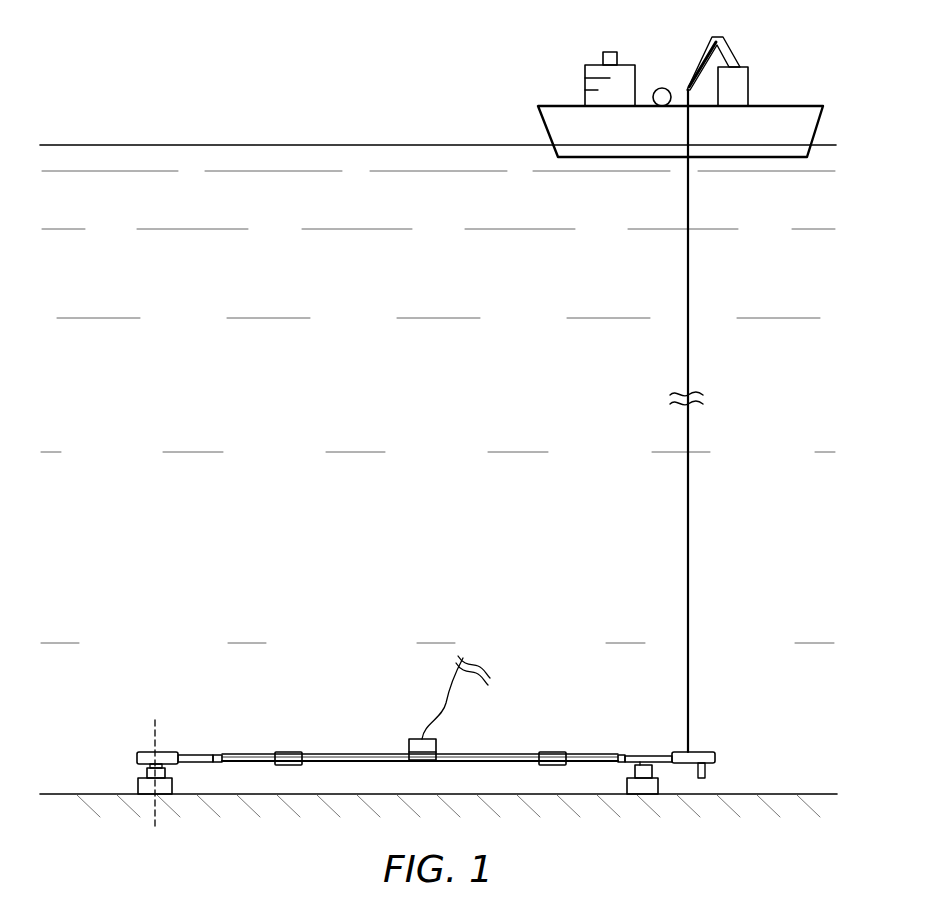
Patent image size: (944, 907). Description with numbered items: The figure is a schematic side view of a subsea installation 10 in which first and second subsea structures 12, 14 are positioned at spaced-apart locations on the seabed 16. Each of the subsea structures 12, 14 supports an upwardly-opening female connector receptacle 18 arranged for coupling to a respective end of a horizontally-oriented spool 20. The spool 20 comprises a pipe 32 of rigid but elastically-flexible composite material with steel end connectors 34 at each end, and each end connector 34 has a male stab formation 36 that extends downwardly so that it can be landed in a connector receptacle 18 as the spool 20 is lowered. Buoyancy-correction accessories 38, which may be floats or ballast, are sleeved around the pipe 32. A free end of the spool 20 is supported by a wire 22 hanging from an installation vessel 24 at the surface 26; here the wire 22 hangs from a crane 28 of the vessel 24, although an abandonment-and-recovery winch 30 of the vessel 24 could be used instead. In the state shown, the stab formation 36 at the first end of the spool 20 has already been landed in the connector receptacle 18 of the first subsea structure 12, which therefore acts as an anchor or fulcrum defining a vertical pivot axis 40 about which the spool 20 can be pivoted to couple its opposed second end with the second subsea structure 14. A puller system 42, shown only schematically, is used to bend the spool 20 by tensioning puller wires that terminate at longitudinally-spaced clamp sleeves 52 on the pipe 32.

The subsea installation 10 is at (117, 744).
The first subsea structure 12 is at (148, 788).
The second subsea structure 14 is at (645, 788).
The seabed 16 is at (810, 794).
The connector receptacle 18 is at (147, 773).
The spool 20 is at (317, 710).
The wire 22 is at (688, 506).
The installation vessel 24 is at (550, 106).
The surface 26 is at (168, 145).
The crane 28 is at (748, 78).
The abandonment-and-recovery winch 30 is at (662, 88).
The pipe 32 is at (366, 752).
The end connector 34 is at (143, 752).
The male stab formation 36 is at (706, 770).
The buoyancy-correction accessory 38 is at (285, 752).
The vertical pivot axis 40 is at (155, 722).
The puller system 42 is at (411, 705).
The clamp sleeve 52 is at (221, 762).